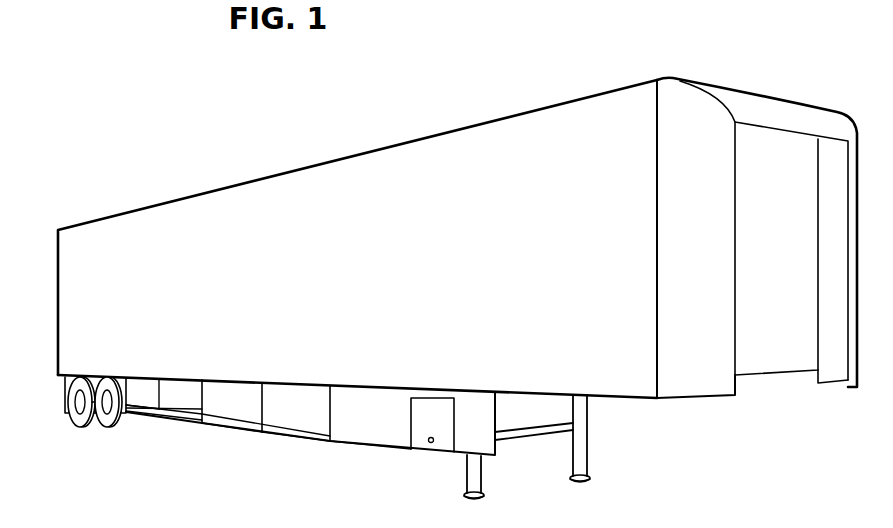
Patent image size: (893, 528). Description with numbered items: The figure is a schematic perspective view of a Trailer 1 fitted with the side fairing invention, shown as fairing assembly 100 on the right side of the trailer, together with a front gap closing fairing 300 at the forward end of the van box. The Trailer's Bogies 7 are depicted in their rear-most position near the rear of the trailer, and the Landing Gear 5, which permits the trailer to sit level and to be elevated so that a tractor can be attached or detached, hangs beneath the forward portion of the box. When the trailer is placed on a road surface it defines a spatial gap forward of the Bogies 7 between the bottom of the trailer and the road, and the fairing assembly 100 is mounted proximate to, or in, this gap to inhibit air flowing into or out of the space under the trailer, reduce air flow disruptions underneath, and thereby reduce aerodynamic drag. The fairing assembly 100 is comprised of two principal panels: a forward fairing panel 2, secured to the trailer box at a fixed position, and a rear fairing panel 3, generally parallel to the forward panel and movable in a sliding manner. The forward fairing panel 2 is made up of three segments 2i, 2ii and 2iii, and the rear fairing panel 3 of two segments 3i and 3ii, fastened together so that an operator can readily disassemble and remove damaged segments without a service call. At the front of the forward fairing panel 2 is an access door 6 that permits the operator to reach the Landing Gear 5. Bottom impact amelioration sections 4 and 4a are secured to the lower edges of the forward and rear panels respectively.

The Trailer 1 is at (405, 243).
The front gap closing fairing 300 is at (710, 243).
The fairing assembly 100 is at (495, 372).
The forward fairing panel 2 is at (328, 437).
The segment of front fairing panel 2i is at (350, 421).
The segment of front fairing panel 2ii is at (303, 416).
The segment of front fairing panel 2iii is at (228, 403).
The rear fairing panel 3 is at (164, 400).
The segment of rear fairing panel 3i is at (180, 389).
The segment of rear fairing panel 3ii is at (148, 386).
The bottom impact amelioration section 4 is at (228, 442).
The bottom impact amelioration section 4a is at (155, 418).
The Landing Gear 5 is at (588, 419).
The access door 6 is at (419, 443).
The Bogies 7 is at (72, 398).